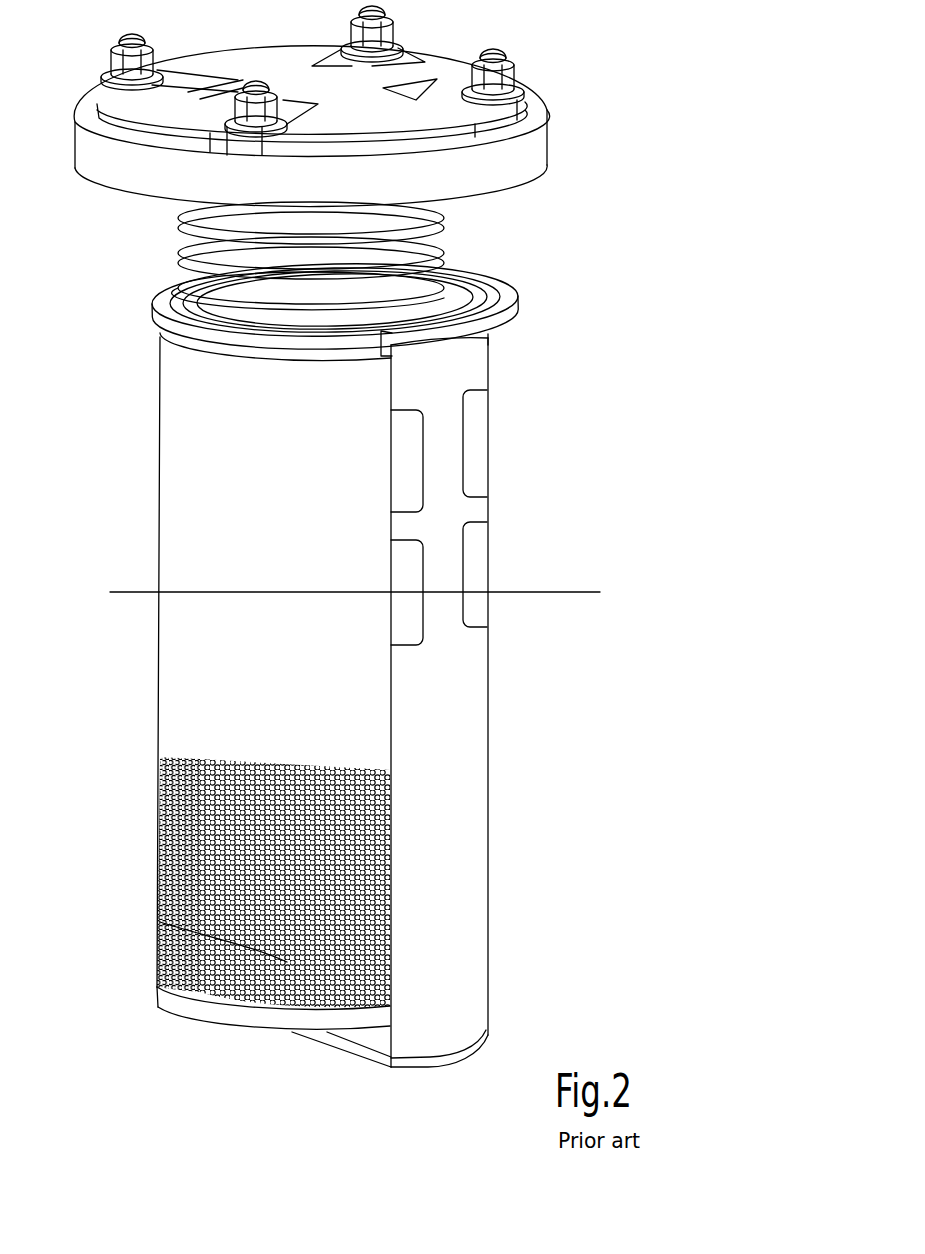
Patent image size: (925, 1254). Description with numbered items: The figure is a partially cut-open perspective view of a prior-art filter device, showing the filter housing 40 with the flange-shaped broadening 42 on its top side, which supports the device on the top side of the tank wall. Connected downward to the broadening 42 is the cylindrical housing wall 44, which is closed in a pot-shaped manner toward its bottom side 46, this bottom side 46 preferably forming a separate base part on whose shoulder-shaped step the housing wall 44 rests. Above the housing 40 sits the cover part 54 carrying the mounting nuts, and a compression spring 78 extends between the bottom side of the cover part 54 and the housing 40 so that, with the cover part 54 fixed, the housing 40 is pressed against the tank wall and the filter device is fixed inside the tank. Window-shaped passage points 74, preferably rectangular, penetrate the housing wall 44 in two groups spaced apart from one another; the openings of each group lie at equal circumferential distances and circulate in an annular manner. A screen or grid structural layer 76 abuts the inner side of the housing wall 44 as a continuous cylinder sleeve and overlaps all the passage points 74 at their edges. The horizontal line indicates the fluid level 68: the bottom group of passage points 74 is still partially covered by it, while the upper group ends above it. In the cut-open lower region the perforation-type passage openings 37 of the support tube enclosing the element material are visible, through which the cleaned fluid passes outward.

The cover part 54 is at (410, 76).
The compression spring 78 is at (443, 257).
The housing 40 is at (495, 297).
The flange-shaped broadening 42 is at (495, 320).
The passage openings 37 is at (160, 922).
The cylindrical housing wall 44 is at (456, 940).
The window-shaped passage points 74 is at (492, 722).
The screen structural layer 76 is at (402, 493).
The bottom side 46 is at (437, 1067).
The fluid level 68 is at (563, 581).